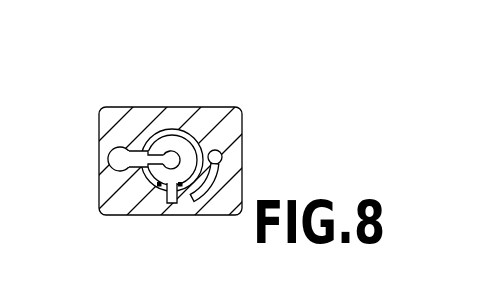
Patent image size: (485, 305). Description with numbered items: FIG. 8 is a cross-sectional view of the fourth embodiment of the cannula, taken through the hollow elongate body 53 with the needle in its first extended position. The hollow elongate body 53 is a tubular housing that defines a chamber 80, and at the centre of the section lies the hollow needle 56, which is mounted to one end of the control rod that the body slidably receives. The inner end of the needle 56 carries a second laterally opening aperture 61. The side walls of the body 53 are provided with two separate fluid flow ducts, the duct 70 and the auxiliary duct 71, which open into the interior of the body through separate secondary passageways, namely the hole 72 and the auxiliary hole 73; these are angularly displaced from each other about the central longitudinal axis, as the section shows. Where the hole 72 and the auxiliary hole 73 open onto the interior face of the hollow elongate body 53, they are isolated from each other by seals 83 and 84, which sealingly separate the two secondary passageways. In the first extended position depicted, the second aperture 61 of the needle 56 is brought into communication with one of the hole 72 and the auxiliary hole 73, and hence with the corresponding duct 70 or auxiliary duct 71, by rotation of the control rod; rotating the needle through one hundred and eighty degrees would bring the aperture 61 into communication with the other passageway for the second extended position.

The hollow elongate body 53 is at (238, 130).
The hollow needle 56 is at (198, 138).
The second laterally opening aperture 61 is at (171, 128).
The duct 70 is at (110, 160).
The auxiliary duct 71 is at (228, 158).
The hole 72 is at (133, 149).
The auxiliary hole 73 is at (171, 192).
The chamber 80 is at (140, 192).
The seal 83 is at (152, 148).
The seal 84 is at (184, 186).